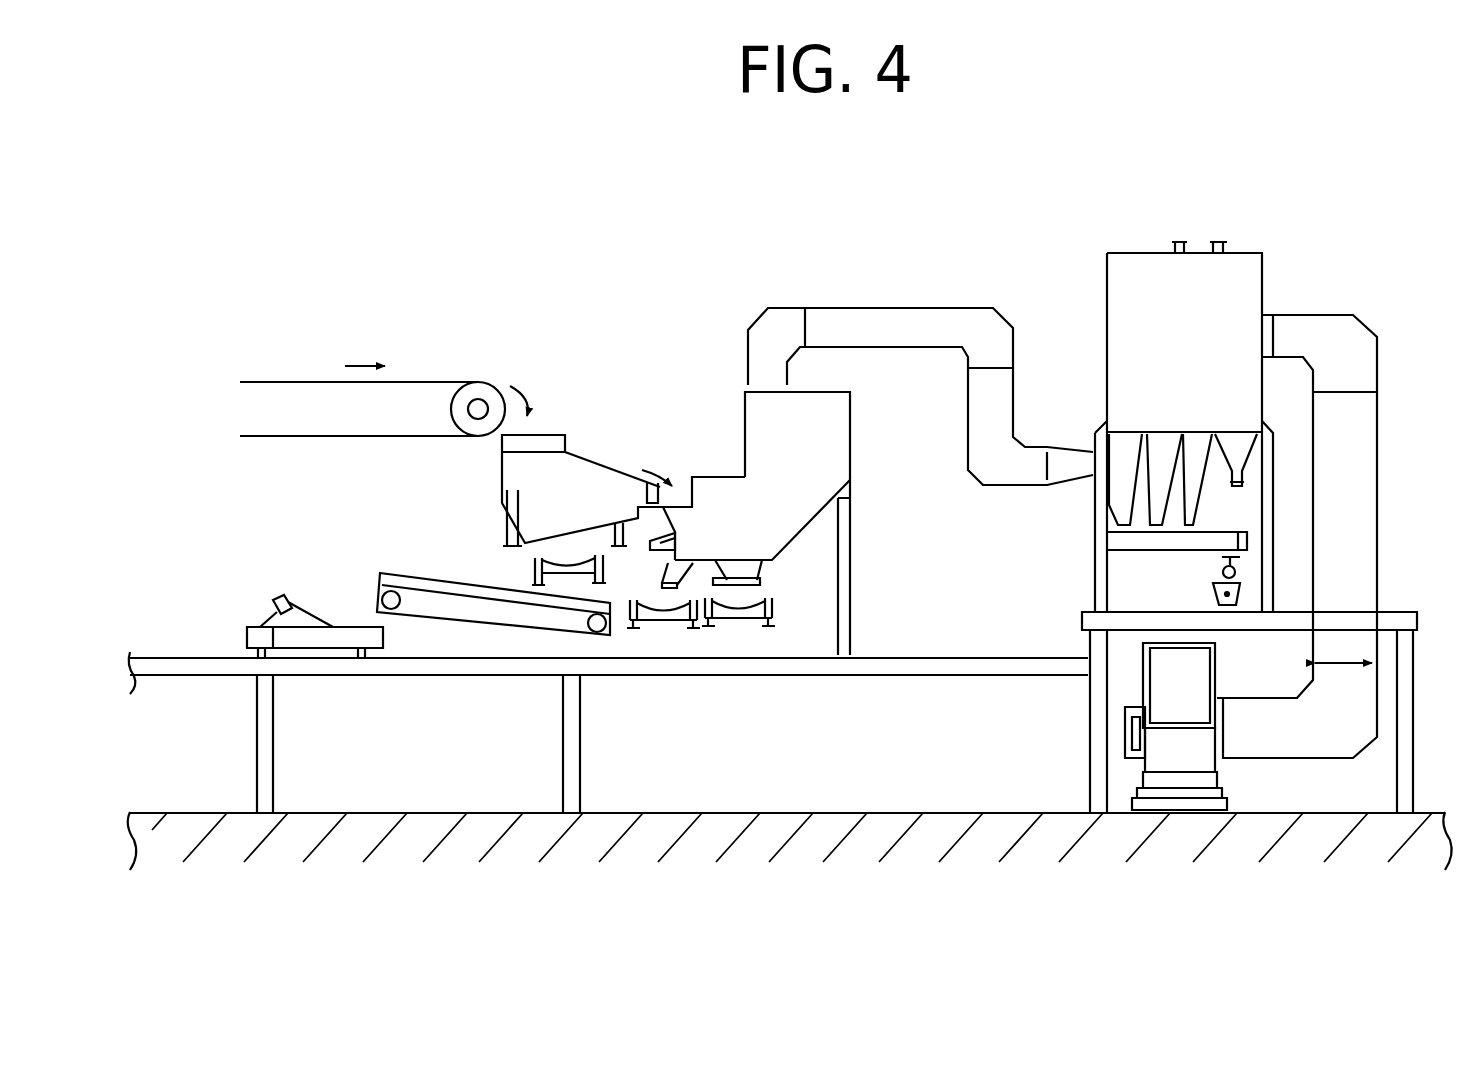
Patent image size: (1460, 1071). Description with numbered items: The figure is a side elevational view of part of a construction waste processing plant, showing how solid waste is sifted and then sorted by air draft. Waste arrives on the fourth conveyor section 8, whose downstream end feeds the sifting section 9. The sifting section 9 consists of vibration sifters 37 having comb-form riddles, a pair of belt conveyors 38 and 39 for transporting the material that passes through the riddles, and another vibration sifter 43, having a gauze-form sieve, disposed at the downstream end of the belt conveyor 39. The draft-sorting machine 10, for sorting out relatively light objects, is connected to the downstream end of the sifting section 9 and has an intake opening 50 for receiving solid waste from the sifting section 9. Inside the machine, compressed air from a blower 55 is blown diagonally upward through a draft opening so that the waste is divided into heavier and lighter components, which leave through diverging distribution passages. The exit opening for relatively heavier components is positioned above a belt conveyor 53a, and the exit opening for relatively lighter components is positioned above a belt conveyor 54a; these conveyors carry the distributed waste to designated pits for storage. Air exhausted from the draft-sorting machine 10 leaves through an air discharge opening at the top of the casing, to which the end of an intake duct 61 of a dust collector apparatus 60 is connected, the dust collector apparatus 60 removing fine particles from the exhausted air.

The fourth conveyor section 8 is at (281, 382).
The sifting section 9 is at (575, 464).
The draft-sorting machine 10 is at (860, 446).
The vibration sifter 37 is at (590, 473).
The belt conveyor 38 is at (535, 572).
The belt conveyor 39 is at (473, 608).
The vibration sifter 43 is at (343, 637).
The intake opening 50 is at (682, 500).
The belt conveyor 53a is at (670, 620).
The belt conveyor 54a is at (755, 612).
The blower 55 is at (658, 540).
The dust collector apparatus 60 is at (1135, 246).
The intake duct 61 is at (902, 317).